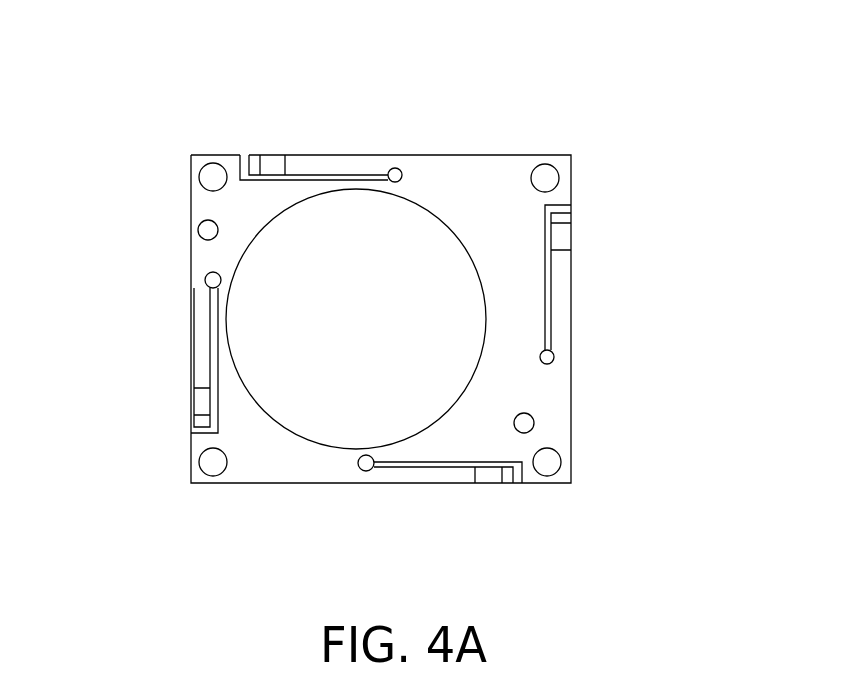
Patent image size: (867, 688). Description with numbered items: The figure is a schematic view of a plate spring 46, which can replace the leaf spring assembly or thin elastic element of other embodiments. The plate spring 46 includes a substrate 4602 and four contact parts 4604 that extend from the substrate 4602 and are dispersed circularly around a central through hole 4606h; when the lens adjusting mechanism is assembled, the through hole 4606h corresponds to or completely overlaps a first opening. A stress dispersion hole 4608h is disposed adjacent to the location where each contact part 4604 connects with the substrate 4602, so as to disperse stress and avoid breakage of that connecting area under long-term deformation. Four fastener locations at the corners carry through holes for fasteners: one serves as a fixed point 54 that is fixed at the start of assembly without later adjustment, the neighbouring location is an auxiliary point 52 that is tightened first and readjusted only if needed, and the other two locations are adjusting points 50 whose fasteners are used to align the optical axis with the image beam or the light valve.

The plate spring 46 is at (212, 110).
The adjusting points 50 is at (191, 168).
The auxiliary point 52 is at (191, 462).
The fixed point 54 is at (571, 462).
The substrate 4602 is at (500, 208).
The contact parts 4604 is at (306, 156).
The through hole 4606h is at (315, 372).
The stress dispersion holes 4608h is at (395, 173).